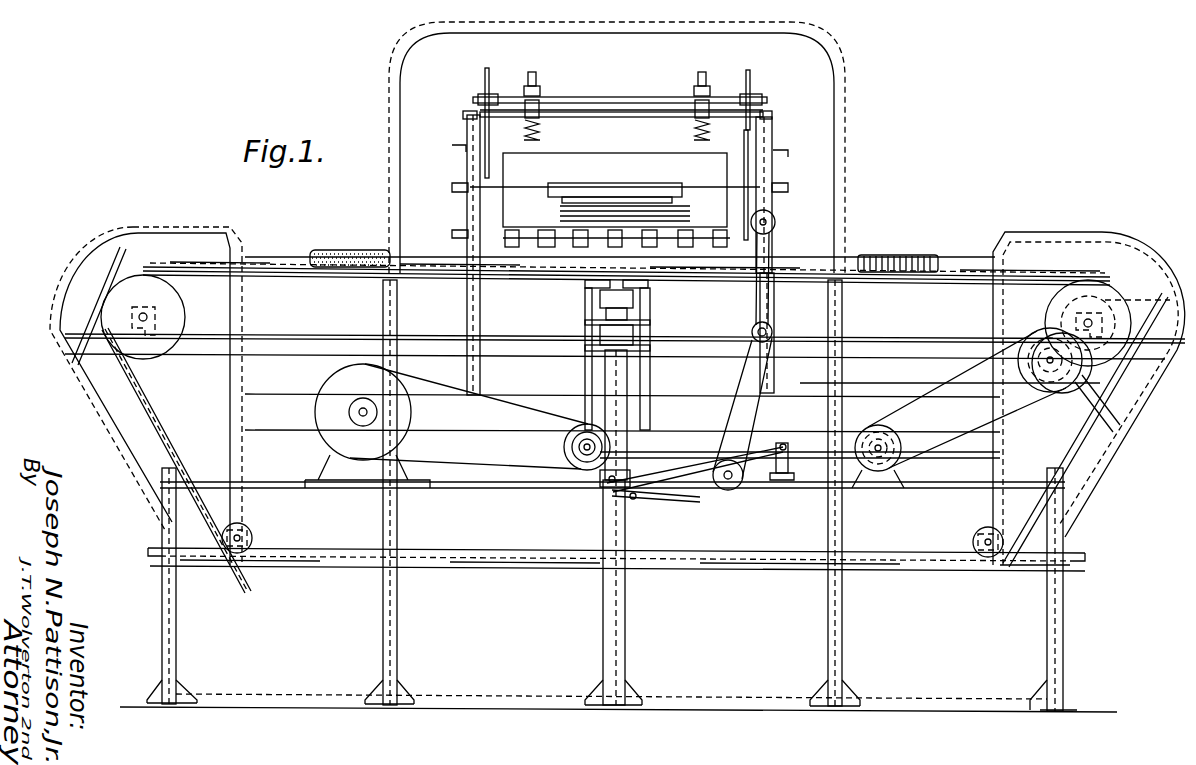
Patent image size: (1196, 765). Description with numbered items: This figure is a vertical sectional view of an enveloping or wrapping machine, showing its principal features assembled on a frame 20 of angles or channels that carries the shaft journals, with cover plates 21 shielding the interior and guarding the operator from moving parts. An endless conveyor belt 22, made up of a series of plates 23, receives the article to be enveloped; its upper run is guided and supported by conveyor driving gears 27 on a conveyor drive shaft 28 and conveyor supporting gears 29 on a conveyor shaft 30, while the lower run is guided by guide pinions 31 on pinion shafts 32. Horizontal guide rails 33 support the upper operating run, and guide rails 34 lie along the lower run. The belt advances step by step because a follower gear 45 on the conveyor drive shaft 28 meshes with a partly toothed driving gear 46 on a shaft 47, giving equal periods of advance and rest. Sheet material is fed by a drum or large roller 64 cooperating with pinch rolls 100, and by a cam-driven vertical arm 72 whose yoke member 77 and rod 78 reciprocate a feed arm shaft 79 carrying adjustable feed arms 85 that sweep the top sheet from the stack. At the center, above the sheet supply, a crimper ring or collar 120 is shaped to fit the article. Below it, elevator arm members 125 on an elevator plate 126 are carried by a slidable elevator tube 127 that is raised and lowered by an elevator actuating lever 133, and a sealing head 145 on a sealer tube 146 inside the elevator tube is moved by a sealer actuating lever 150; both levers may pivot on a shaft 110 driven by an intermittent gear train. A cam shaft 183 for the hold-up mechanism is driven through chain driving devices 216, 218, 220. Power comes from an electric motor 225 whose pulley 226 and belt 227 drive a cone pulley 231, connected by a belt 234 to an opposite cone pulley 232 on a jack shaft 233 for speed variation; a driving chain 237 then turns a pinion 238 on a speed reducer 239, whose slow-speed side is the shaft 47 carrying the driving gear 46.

The frame 20 is at (617, 426).
The cover plates 21 is at (615, 342).
The endless conveyor belt 22 is at (655, 395).
The plates 23 is at (898, 246).
The conveyor driving gears 27 is at (1117, 277).
The conveyor drive shaft 28 is at (1088, 285).
The conveyor supporting gears 29 is at (103, 317).
The conveyor shaft 30 is at (88, 322).
The guide pinions 31 is at (539, 437).
The pinion shafts 32 is at (625, 563).
The horizontal guide rails 33 is at (350, 234).
The guide rails 34 is at (616, 583).
The follower gear 45 is at (1144, 269).
The driving gear 46 is at (1123, 416).
The shaft 47 is at (1054, 380).
The drum or large roller 64 is at (620, 184).
The vertical arm 72 is at (666, 154).
The yoke member 77 is at (769, 96).
The rod 78 is at (622, 112).
The feed arm shaft 79 is at (621, 127).
The feed arms 85 is at (617, 99).
The pinch rolls 100 is at (616, 248).
The shaft 110 is at (794, 443).
The crimper ring or collar 120 is at (620, 177).
The elevator arm members 125 is at (620, 299).
The elevator plate 126 is at (642, 334).
The elevator tube 127 is at (648, 496).
The elevator actuating lever 133 is at (695, 465).
The sealing head 145 is at (578, 324).
The sealer tube 146 is at (598, 493).
The sealer actuating lever 150 is at (658, 508).
The cam shaft 183 is at (785, 219).
The chain driving device 216 is at (787, 195).
The chain driving device 218 is at (742, 331).
The chain driving device 220 is at (770, 361).
The electric motor 225 is at (350, 426).
The pulley 226 is at (328, 420).
The belt 227 is at (469, 418).
The cone pulley 231 is at (569, 477).
The cone pulley 232 is at (898, 476).
The jack shaft 233 is at (875, 490).
The belt 234 is at (800, 429).
The driving chain 237 is at (967, 399).
The pinion 238 is at (1081, 270).
The speed reducer 239 is at (1050, 340).